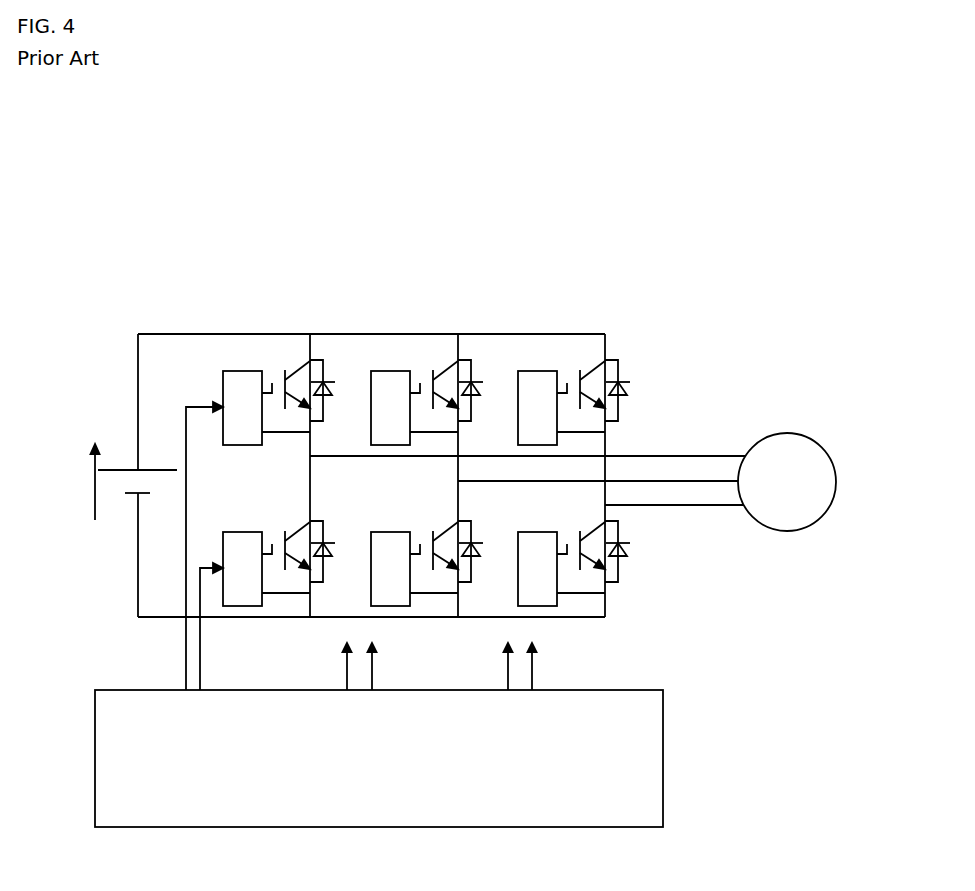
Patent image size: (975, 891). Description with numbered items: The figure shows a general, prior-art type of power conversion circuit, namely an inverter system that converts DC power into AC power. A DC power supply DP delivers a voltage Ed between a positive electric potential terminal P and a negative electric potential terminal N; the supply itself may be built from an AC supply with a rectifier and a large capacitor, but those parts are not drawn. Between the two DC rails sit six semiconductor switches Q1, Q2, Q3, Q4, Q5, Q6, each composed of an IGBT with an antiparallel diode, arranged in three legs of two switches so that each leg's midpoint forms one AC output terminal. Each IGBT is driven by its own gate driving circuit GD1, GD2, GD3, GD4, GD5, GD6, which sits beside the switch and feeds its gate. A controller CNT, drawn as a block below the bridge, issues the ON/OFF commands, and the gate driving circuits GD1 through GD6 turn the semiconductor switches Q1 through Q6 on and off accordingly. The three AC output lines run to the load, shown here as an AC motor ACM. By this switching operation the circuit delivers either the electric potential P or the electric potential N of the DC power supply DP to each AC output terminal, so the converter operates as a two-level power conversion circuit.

The positive electric potential terminal P is at (360, 393).
The negative electric potential terminal N is at (357, 560).
The DC power supply DP is at (137, 502).
The voltage Ed is at (76, 482).
The gate driving circuit GD1 is at (224, 517).
The gate driving circuit GD2 is at (231, 599).
The gate driving circuit GD3 is at (386, 395).
The gate driving circuit GD4 is at (385, 557).
The gate driving circuit GD5 is at (530, 395).
The gate driving circuit GD6 is at (532, 557).
The semiconductor switch Q1 is at (298, 388).
The semiconductor switch Q2 is at (298, 549).
The semiconductor switch Q3 is at (446, 388).
The semiconductor switch Q4 is at (446, 546).
The semiconductor switch Q5 is at (593, 387).
The semiconductor switch Q6 is at (593, 546).
The AC motor ACM is at (793, 450).
The controller CNT is at (379, 735).